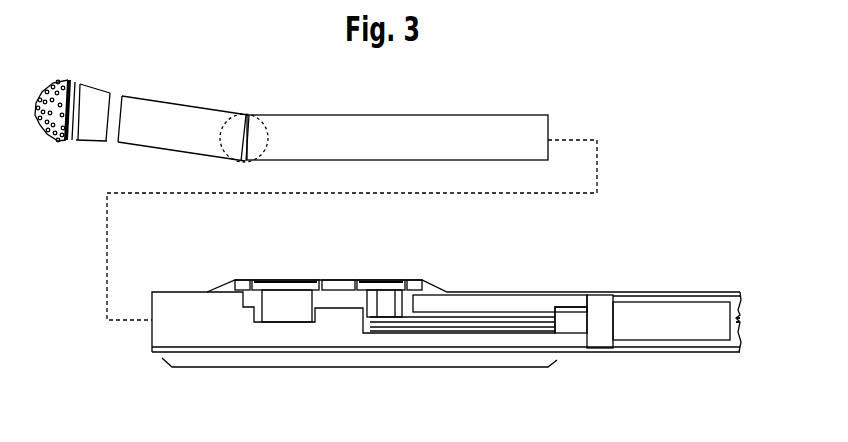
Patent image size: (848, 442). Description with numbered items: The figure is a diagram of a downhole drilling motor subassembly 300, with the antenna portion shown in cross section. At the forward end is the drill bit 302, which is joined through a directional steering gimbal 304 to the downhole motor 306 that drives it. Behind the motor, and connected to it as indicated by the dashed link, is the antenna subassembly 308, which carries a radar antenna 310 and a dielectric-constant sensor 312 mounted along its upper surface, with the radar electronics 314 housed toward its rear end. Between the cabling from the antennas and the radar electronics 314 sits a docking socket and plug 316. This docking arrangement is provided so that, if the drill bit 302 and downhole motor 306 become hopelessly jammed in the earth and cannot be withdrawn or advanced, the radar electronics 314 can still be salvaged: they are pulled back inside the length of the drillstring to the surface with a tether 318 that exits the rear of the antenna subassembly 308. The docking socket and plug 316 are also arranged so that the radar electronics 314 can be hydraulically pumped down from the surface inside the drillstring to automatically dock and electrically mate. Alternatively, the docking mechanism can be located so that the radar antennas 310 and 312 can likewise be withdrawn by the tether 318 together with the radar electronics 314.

The downhole drilling motor subassembly 300 is at (606, 75).
The drill bit 302 is at (43, 124).
The directional steering gimbal 304 is at (257, 125).
The downhole motor 306 is at (433, 115).
The antenna subassembly 308 is at (358, 370).
The radar antenna 310 is at (268, 279).
The dielectric-constant sensor 312 is at (388, 280).
The radar electronics 314 is at (635, 312).
The docking socket and plug 316 is at (594, 302).
The tether 318 is at (740, 302).